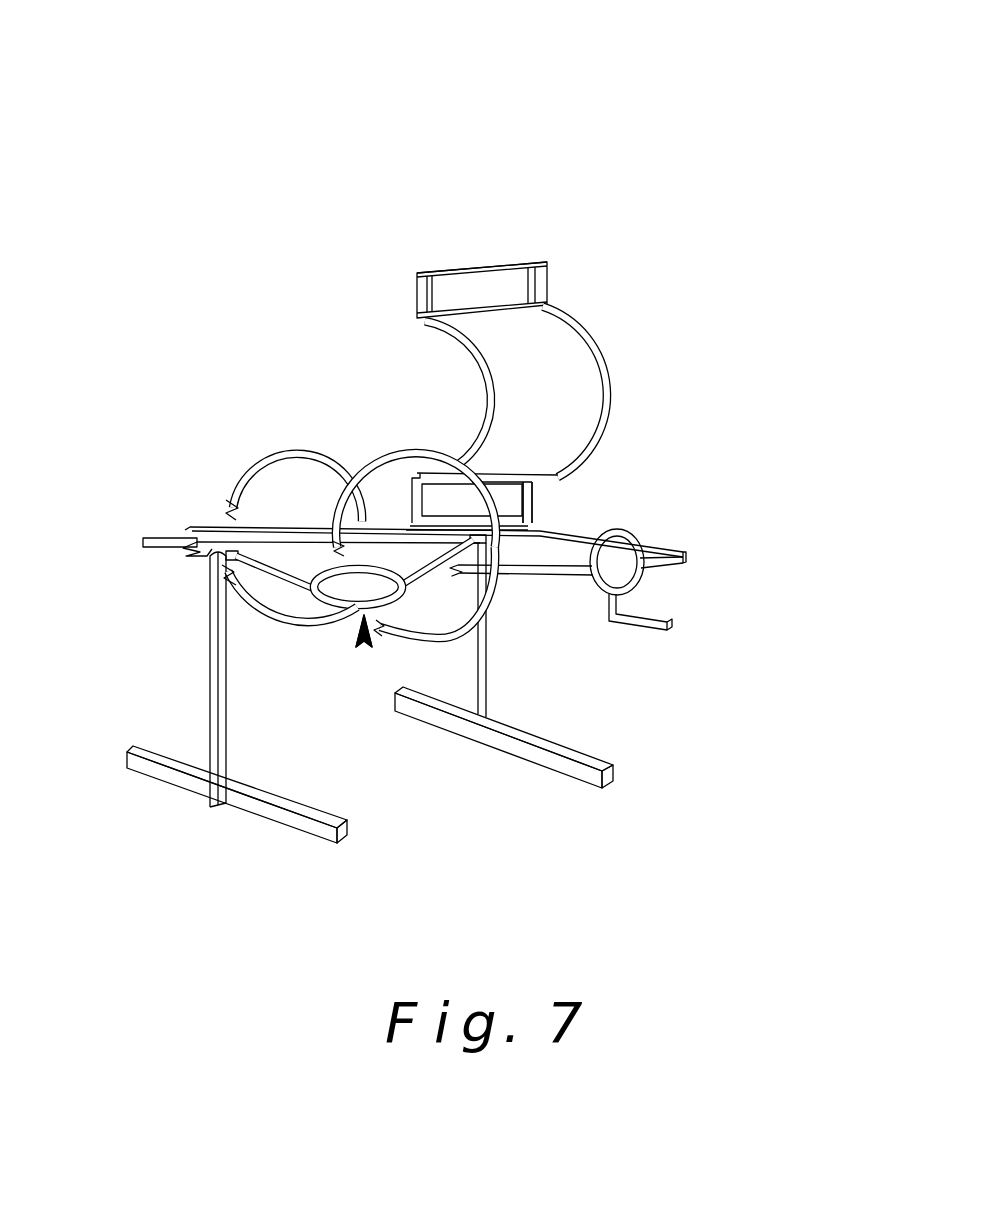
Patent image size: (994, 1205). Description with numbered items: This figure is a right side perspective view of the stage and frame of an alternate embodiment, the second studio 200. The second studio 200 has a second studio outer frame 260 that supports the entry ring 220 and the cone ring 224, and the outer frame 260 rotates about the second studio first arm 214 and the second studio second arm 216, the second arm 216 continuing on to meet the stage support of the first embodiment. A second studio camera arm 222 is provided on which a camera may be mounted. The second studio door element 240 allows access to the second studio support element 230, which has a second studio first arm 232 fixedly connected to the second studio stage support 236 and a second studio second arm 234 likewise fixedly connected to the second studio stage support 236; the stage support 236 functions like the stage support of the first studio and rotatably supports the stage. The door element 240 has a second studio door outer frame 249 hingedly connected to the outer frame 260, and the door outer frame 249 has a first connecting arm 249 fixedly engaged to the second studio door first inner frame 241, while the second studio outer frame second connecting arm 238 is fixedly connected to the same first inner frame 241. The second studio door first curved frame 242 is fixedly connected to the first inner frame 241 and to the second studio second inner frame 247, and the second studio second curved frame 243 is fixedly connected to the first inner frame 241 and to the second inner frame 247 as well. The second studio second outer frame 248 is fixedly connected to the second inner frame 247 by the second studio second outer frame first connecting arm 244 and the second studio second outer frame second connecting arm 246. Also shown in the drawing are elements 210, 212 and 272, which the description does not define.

The second studio 200 is at (631, 168).
The base bar 210 is at (527, 753).
The base bar 212 is at (280, 813).
The second studio first arm 214 is at (487, 688).
The second studio second arm 216 is at (220, 807).
The entry ring 220 is at (642, 580).
The second studio camera arm 222 is at (247, 476).
The cone ring 224 is at (437, 642).
The second studio support element 230 is at (363, 650).
The second studio first arm 232 is at (420, 577).
The second studio second arm 234 is at (273, 575).
The second studio stage support 236 is at (373, 618).
The second studio outer frame second connecting arm 238 is at (405, 492).
The second studio door element 240 is at (561, 274).
The second studio door first inner frame 241 is at (500, 477).
The second studio door first curved frame 242 is at (607, 386).
The second studio second curved frame 243 is at (470, 352).
The second studio second outer frame first connecting arm 244 is at (545, 287).
The second studio second outer frame second connecting arm 246 is at (420, 297).
The second studio second inner frame 247 is at (468, 318).
The second studio second outer frame 248 is at (505, 266).
The second studio door outer frame 249 is at (533, 507).
The second studio outer frame 260 is at (645, 550).
The pivot block 272 is at (228, 555).